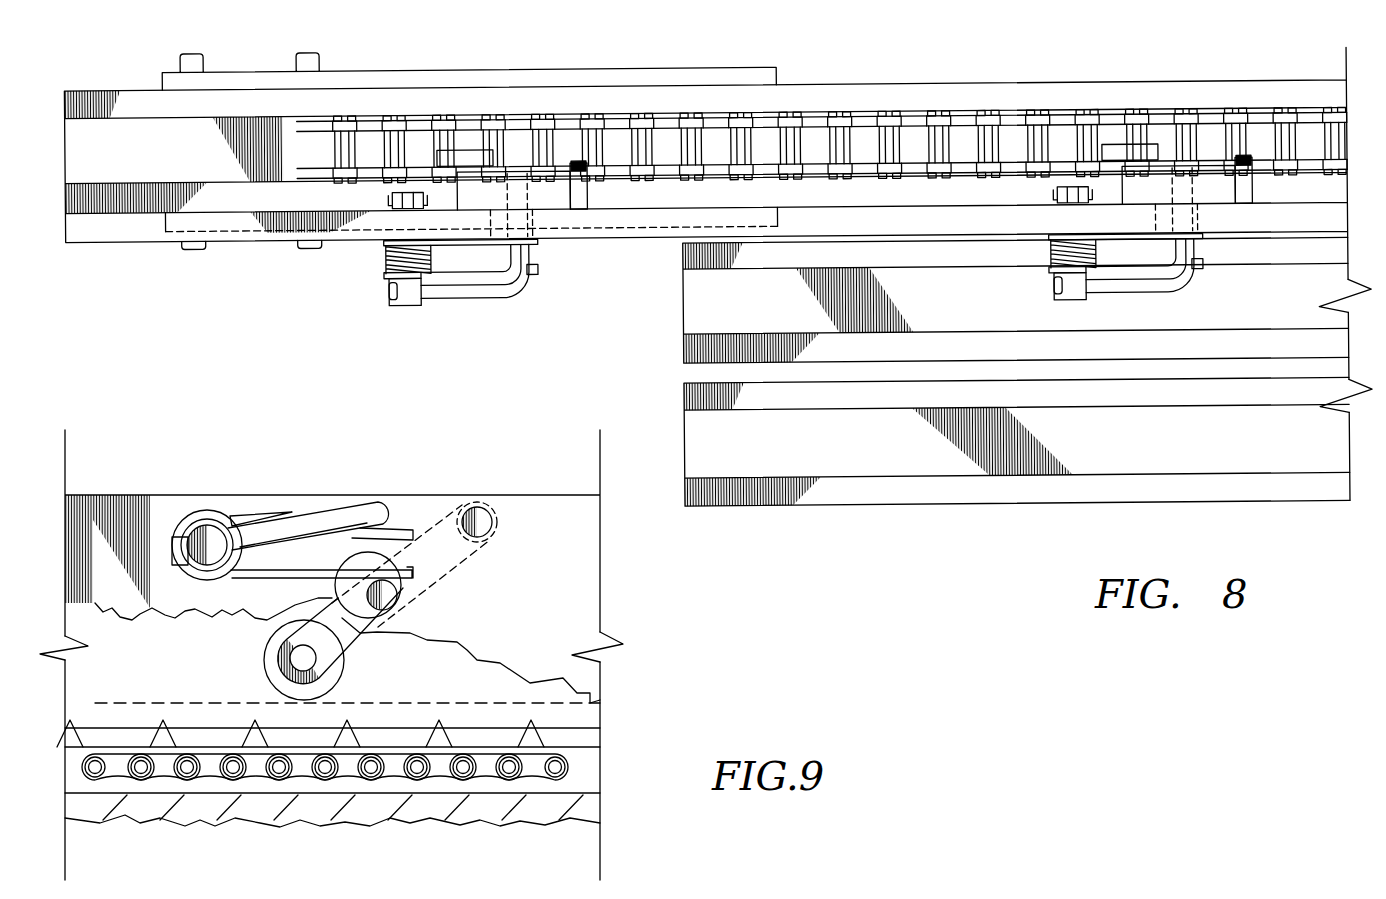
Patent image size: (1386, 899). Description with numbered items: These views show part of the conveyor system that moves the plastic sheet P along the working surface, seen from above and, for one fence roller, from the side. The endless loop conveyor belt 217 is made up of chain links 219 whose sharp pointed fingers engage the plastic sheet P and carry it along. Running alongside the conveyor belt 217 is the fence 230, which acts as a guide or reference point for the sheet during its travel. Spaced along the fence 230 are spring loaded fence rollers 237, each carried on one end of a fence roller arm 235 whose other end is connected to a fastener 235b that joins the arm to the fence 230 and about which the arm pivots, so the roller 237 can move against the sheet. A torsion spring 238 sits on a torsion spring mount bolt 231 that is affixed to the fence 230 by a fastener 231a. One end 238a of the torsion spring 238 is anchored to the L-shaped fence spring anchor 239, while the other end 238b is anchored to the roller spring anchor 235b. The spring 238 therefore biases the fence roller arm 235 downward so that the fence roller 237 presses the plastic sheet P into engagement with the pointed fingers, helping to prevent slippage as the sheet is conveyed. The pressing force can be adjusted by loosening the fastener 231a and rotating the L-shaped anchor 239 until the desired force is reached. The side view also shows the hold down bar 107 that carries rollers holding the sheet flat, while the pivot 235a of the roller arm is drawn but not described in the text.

In FIG. 9, the hold down bar 107 is at (558, 510).
In FIG. 8, the endless loop conveyor belt 217 is at (933, 120).
In FIG. 9, the endless loop conveyor belt 217 is at (162, 768).
In FIG. 8, the chain links 219 is at (1035, 121).
In FIG. 9, the chain links 219 is at (255, 775).
In FIG. 8, the fence 230 is at (113, 223).
In FIG. 8, the torsion spring mount bolt 231 is at (405, 297).
In FIG. 9, the torsion spring mount bolt 231 is at (207, 540).
In FIG. 8, the fastener 231a is at (386, 198).
In FIG. 8, the fence roller arm 235 is at (577, 196).
In FIG. 9, the fence roller arm 235 is at (350, 637).
In FIG. 9, the pivot pin 235a is at (400, 610).
In FIG. 9, the fastener 235b is at (490, 533).
In FIG. 8, the fence roller 237 is at (463, 161).
In FIG. 9, the fence roller 237 is at (264, 650).
In FIG. 8, the torsion spring 238 is at (385, 255).
In FIG. 9, the torsion spring 238 is at (235, 520).
In FIG. 8, the end of torsion spring 238a is at (537, 275).
In FIG. 9, the end of torsion spring 238a is at (413, 528).
In FIG. 8, the end of torsion spring 238b is at (537, 251).
In FIG. 9, the end of torsion spring 238b is at (410, 580).
In FIG. 8, the L-shaped fence spring anchor 239 is at (480, 285).
In FIG. 9, the L-shaped fence spring anchor 239 is at (327, 522).
In FIG. 9, the plastic sheet P is at (195, 700).